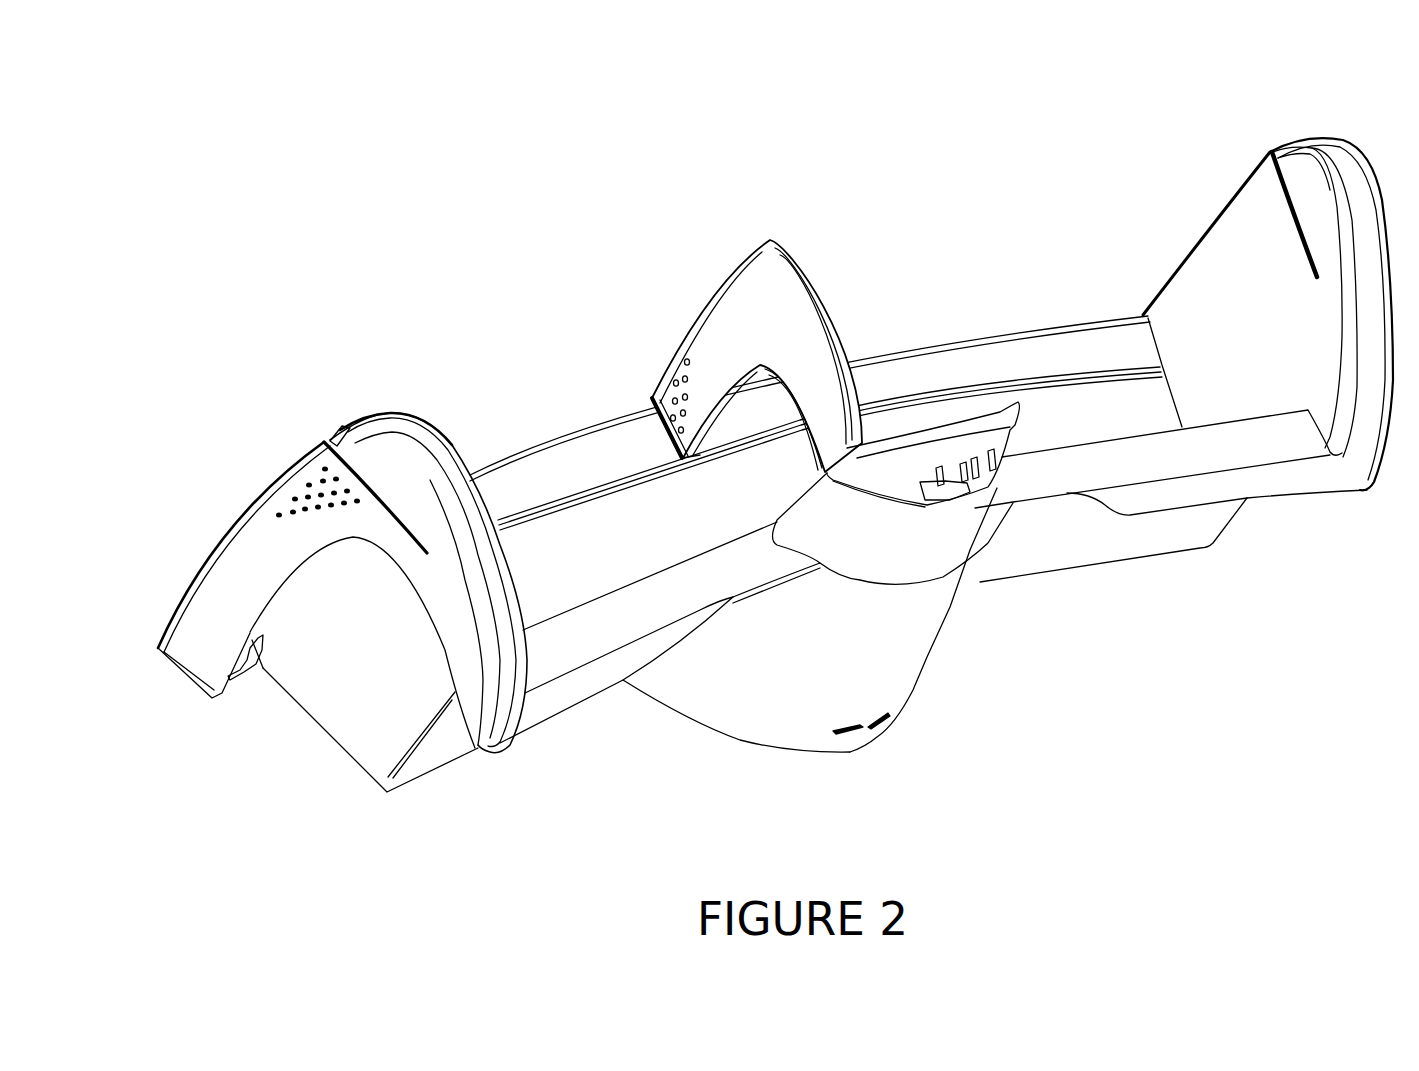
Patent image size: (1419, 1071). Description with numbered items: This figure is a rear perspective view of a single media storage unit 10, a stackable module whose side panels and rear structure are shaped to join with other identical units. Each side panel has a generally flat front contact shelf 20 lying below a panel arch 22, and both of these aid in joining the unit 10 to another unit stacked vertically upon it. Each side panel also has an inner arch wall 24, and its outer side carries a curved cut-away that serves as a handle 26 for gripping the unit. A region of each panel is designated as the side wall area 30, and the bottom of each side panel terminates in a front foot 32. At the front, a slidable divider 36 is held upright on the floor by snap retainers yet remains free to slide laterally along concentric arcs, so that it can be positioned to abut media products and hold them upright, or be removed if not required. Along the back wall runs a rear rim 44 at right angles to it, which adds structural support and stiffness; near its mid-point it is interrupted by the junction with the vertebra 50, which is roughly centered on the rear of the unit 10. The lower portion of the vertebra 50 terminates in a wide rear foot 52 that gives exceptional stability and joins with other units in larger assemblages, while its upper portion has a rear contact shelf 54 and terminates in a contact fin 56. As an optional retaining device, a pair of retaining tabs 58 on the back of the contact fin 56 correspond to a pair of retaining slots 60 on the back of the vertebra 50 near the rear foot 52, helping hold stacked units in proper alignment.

The unit 10 is at (338, 228).
The front contact shelf 20 is at (322, 437).
The panel arch 22 is at (398, 417).
The inner arch wall 24 is at (1306, 166).
The handle 26 is at (458, 650).
The side wall area 30 is at (353, 688).
The front foot 32 is at (250, 677).
The slidable divider 36 is at (741, 330).
The rear rim 44 is at (617, 617).
The vertebra 50 is at (927, 670).
The rear foot 52 is at (722, 727).
The rear contact shelf 54 is at (887, 490).
The contact fin 56 is at (958, 447).
The retaining tabs 58 is at (950, 487).
The retaining slots 60 is at (847, 732).